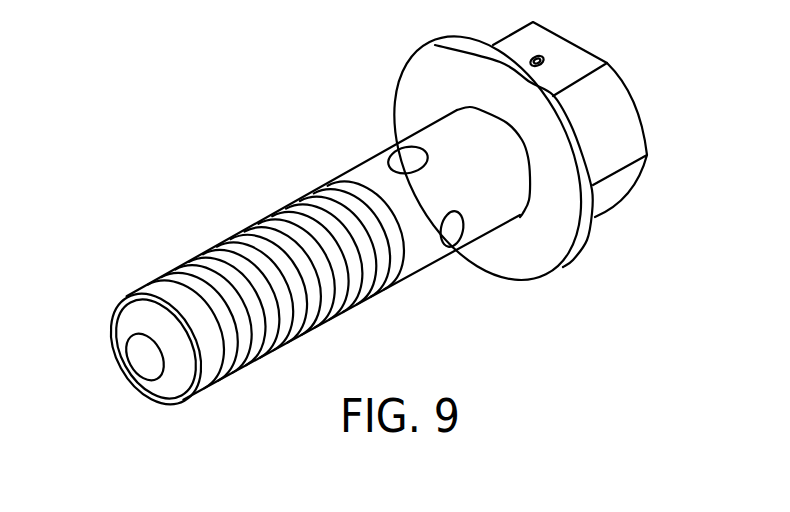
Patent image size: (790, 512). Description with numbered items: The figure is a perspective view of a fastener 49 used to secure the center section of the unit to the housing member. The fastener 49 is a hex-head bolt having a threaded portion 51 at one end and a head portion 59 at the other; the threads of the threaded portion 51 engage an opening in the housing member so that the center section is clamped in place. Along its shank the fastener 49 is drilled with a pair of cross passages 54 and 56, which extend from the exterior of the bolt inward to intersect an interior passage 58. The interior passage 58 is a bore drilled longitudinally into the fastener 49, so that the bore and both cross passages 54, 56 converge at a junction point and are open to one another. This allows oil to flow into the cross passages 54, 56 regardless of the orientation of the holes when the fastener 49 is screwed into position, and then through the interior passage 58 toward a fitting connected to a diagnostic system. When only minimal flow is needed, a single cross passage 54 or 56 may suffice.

The fastener 49 is at (160, 77).
The threaded portion 51 is at (230, 253).
The cross passage 54 is at (400, 160).
The cross passage 56 is at (450, 233).
The interior passage 58 is at (143, 358).
The head portion 59 is at (620, 134).